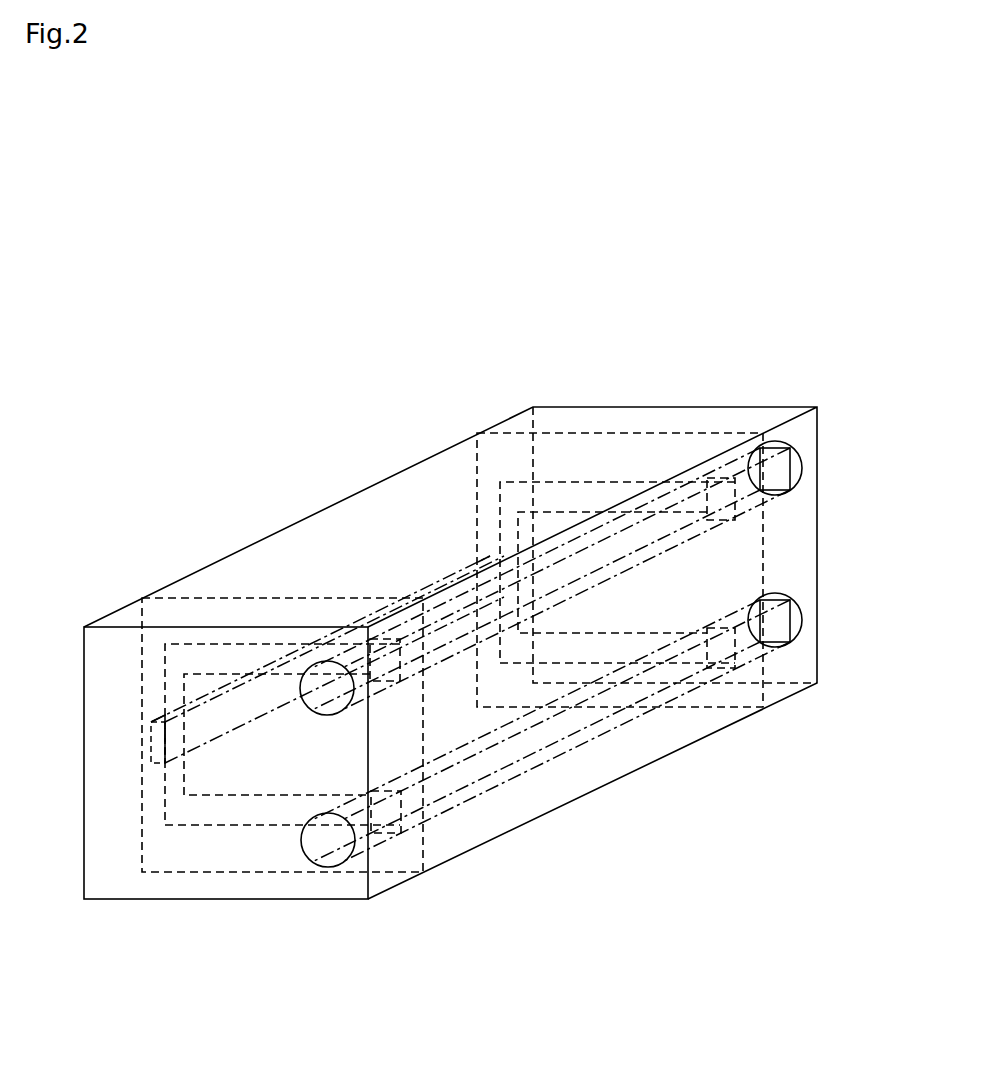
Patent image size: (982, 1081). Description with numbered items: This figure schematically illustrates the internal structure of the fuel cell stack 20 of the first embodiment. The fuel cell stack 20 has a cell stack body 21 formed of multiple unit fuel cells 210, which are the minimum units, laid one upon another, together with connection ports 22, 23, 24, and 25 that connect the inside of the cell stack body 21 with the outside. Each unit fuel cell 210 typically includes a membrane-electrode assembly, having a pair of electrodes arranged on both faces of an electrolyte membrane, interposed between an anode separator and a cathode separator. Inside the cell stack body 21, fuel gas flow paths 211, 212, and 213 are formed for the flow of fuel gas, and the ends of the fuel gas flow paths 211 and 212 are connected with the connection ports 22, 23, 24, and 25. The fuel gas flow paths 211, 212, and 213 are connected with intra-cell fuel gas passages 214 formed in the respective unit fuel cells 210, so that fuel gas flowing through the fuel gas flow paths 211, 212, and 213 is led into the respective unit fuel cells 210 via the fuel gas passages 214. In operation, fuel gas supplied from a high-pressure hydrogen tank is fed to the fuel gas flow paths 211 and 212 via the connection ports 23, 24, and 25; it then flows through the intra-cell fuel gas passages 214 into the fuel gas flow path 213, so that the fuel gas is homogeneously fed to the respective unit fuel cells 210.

The fuel cell stack 20 is at (276, 423).
The cell stack body 21 is at (348, 511).
The unit fuel cell 210 is at (157, 612).
The fuel gas flow path 211 is at (507, 747).
The fuel gas flow path 212 is at (632, 553).
The fuel gas flow path 213 is at (228, 723).
The intra-cell fuel gas passage 214 is at (232, 645).
The connection port 22 is at (797, 628).
The connection port 23 is at (796, 478).
The connection port 24 is at (318, 712).
The connection port 25 is at (310, 842).